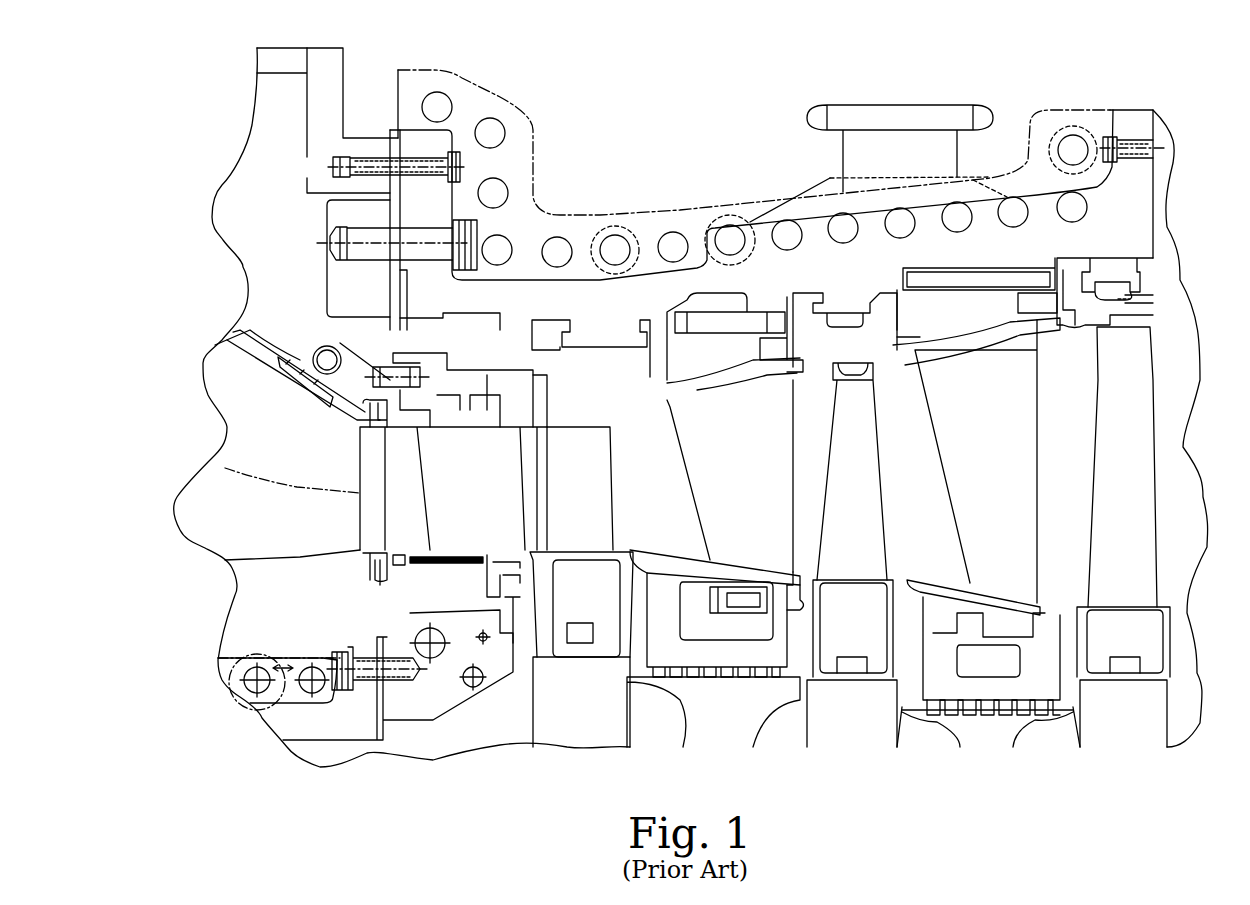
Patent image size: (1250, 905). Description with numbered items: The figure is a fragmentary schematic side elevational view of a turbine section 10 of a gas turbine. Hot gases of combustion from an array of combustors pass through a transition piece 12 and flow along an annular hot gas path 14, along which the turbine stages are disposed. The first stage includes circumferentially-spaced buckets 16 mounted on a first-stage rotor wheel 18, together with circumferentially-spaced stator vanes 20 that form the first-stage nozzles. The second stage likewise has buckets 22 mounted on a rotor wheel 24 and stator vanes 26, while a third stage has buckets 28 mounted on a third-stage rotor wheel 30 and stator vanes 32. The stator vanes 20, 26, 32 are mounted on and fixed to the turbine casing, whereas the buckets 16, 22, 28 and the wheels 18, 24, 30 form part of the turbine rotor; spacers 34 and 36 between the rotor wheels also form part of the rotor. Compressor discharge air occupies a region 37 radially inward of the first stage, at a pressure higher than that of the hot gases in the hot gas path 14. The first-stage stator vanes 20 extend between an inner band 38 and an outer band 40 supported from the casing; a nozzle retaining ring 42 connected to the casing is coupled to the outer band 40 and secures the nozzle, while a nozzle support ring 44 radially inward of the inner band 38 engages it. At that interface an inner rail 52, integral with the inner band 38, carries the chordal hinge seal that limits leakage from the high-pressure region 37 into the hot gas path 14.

The turbine section 10 is at (619, 125).
The transition piece 12 is at (240, 412).
The hot gas path 14 is at (645, 420).
The buckets 16 is at (603, 458).
The first-stage rotor wheel 18 is at (562, 740).
The stator vanes 20 is at (458, 460).
The buckets 22 is at (872, 463).
The rotor wheel 24 is at (855, 735).
The stator vanes 26 is at (750, 447).
The buckets 28 is at (1152, 458).
The third-stage rotor wheel 30 is at (1128, 740).
The stator vanes 32 is at (1003, 444).
The spacer 34 is at (718, 735).
The spacer 36 is at (990, 735).
The region 37 is at (347, 619).
The inner band 38 is at (480, 560).
The outer band 40 is at (482, 425).
The nozzle retaining ring 42 is at (424, 365).
The nozzle support ring 44 is at (517, 595).
The inner rail 52 is at (490, 575).